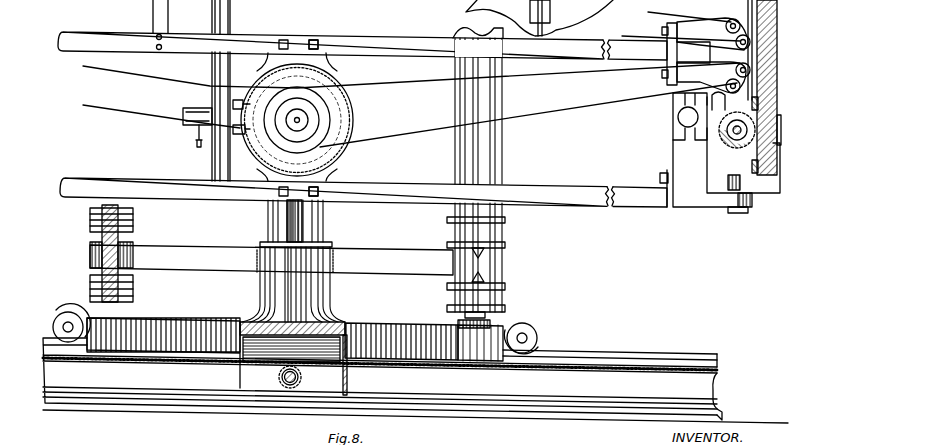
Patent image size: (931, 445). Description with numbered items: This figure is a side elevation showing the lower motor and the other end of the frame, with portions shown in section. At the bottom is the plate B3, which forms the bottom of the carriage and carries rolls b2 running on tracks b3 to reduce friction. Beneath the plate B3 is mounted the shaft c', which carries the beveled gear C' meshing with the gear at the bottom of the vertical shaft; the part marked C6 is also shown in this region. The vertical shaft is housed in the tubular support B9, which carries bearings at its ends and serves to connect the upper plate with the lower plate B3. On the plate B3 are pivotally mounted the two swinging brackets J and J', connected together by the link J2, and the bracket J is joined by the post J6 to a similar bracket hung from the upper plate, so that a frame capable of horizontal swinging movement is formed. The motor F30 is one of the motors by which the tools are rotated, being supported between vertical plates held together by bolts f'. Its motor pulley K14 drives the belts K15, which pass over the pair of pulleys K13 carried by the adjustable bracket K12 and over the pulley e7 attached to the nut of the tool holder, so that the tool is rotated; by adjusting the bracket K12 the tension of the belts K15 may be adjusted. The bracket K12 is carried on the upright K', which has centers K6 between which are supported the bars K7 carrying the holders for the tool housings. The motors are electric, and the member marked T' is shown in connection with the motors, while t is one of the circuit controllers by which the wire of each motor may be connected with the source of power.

The vertical post T' is at (202, 90).
The circuit controller t is at (196, 128).
The bolt f' is at (289, 120).
The motor pulley K14 is at (300, 88).
The motor F30 is at (320, 146).
The post J6 is at (503, 156).
The belt K15 is at (567, 108).
The adjustable bracket K12 is at (673, 112).
The pulley K13 is at (740, 84).
The pulley e7 is at (747, 133).
The shaft c' is at (734, 149).
The bar K7 is at (776, 170).
The upright K' is at (720, 149).
The center K6 is at (756, 200).
The swinging bracket J' is at (94, 253).
The tubular support B9 is at (330, 220).
The link J2 is at (396, 251).
The swinging bracket J is at (485, 265).
The plate B3 is at (213, 359).
The beveled gear C' is at (305, 377).
The gear shaft C6 is at (291, 389).
The roll b2 is at (66, 316).
The track b3 is at (690, 353).